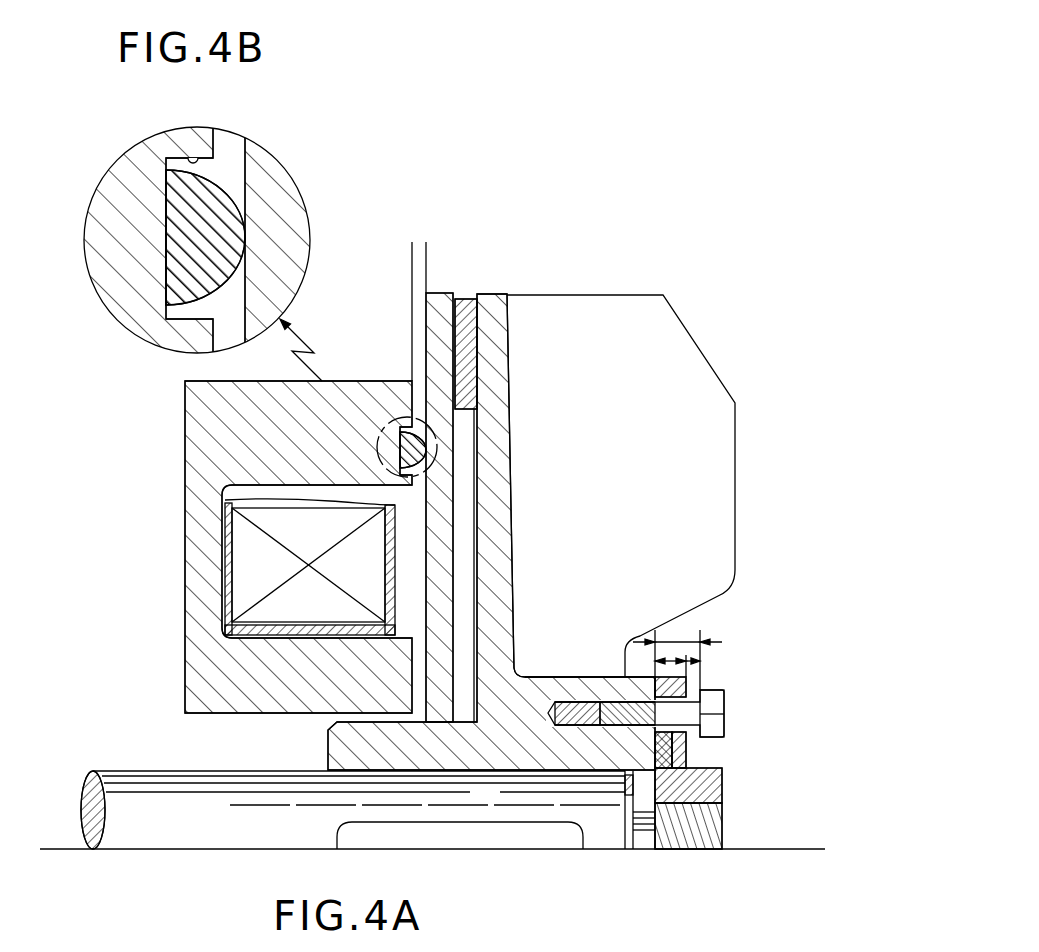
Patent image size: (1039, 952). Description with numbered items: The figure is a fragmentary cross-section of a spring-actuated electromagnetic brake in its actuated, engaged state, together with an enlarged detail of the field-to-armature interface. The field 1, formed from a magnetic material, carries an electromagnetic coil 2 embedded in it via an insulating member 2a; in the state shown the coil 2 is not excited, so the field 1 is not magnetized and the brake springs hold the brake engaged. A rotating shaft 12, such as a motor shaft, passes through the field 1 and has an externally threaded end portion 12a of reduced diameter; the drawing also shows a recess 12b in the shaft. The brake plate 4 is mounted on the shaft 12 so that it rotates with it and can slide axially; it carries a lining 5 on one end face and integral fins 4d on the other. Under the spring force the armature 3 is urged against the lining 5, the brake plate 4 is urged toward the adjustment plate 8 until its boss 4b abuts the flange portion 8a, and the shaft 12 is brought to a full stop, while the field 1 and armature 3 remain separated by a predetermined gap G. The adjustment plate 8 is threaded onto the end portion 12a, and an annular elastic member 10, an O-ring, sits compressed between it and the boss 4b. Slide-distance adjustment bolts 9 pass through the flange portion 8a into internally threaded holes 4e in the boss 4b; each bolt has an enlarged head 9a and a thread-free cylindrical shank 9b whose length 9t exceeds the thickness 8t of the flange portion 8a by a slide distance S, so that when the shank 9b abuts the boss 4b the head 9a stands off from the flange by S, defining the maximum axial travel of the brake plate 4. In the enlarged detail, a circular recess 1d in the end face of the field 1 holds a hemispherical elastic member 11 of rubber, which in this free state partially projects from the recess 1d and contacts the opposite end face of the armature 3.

In FIG. 4B, the field 1 is at (128, 185).
In FIG. 4A, the field 1 is at (181, 420).
In FIG. 4B, the circular recess 1d is at (193, 156).
In FIG. 4B, the hemispherical elastic member 11 is at (218, 163).
In FIG. 4B, the armature 3 is at (278, 194).
In FIG. 4A, the armature 3 is at (442, 290).
In FIG. 4A, the electromagnetic coil 2 is at (262, 556).
In FIG. 4A, the insulating member 2a is at (228, 501).
In FIG. 4A, the gap G is at (458, 252).
In FIG. 4A, the lining 5 is at (467, 296).
In FIG. 4A, the brake plate 4 is at (499, 291).
In FIG. 4A, the fin 4d is at (679, 355).
In FIG. 4A, the boss 4b is at (597, 677).
In FIG. 4A, the internally threaded hole 4e is at (562, 700).
In FIG. 4A, the flange portion 8a is at (690, 688).
In FIG. 4A, the slide-distance adjustment bolt 9 is at (676, 716).
In FIG. 4A, the head 9a is at (722, 728).
In FIG. 4A, the thread-free cylindrical shank 9b is at (690, 720).
In FIG. 4A, the annular elastic member 10 is at (722, 778).
In FIG. 4A, the adjustment plate 8 is at (735, 794).
In FIG. 4A, the length 9t is at (678, 642).
In FIG. 4A, the thickness 8t is at (690, 661).
In FIG. 4A, the slide distance S is at (699, 666).
In FIG. 4A, the rotating shaft 12 is at (83, 767).
In FIG. 4A, the externally threaded end portion 12a is at (685, 851).
In FIG. 4A, the shaft recess 12b is at (503, 835).